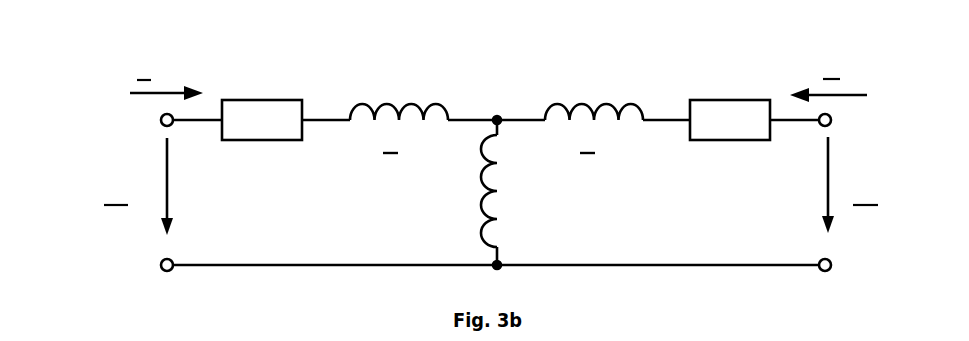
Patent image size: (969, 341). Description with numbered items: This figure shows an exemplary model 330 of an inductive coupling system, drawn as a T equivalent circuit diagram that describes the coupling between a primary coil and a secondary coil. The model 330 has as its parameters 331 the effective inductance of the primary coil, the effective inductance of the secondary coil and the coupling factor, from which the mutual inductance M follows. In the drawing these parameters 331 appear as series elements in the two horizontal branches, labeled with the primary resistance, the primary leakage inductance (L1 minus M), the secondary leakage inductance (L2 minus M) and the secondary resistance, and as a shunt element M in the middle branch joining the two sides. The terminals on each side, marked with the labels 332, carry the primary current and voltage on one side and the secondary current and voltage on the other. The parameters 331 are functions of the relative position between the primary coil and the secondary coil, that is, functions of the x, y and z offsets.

The model 330 is at (128, 58).
The parameters 331 is at (272, 98).
The terminals / port quantities 332 is at (147, 105).